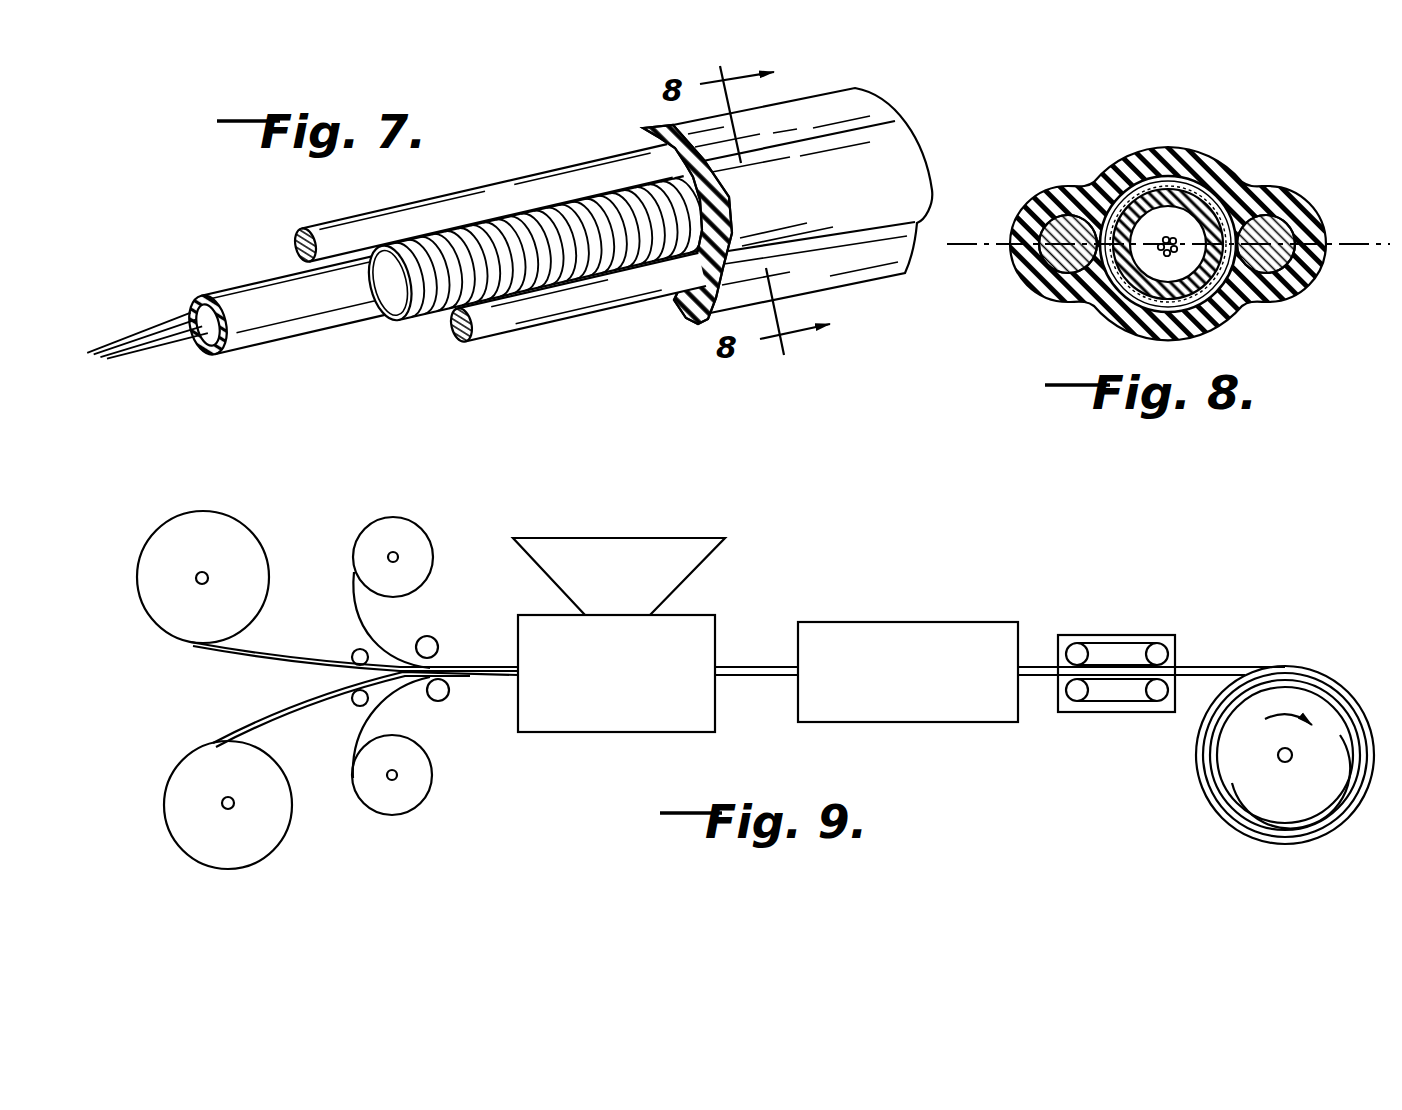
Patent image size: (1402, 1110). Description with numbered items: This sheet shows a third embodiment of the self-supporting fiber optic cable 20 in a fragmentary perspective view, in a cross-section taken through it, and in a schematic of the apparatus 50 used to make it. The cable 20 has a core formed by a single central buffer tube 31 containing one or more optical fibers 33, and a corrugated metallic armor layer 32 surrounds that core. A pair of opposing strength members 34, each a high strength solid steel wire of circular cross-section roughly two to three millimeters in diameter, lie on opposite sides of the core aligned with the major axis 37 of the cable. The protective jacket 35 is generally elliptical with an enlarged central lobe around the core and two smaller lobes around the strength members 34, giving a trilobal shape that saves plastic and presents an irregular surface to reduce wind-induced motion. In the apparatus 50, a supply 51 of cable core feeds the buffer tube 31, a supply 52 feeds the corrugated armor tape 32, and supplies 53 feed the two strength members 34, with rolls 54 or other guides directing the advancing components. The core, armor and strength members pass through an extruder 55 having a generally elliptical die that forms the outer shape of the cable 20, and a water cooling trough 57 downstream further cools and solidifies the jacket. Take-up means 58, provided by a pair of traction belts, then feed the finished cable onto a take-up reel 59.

In FIG. 7, the self-supporting fiber optic cable 20 is at (590, 127).
In FIG. 8, the self-supporting fiber optic cable 20 is at (1087, 152).
In FIG. 9, the self-supporting fiber optic cable 20 is at (746, 661).
In FIG. 7, the central buffer tube 31 is at (247, 293).
In FIG. 8, the central buffer tube 31 is at (1150, 205).
In FIG. 9, the central buffer tube 31 is at (228, 654).
In FIG. 7, the corrugated metallic armor layer 32 is at (447, 237).
In FIG. 8, the corrugated metallic armor layer 32 is at (1192, 210).
In FIG. 9, the corrugated metallic armor layer 32 is at (277, 715).
In FIG. 7, the optical fibers 33 is at (162, 345).
In FIG. 8, the optical fibers 33 is at (1172, 232).
In FIG. 7, the strength members 34 is at (545, 185).
In FIG. 8, the strength members 34 is at (1284, 228).
In FIG. 9, the strength members 34 is at (375, 620).
In FIG. 7, the protective jacket 35 is at (684, 306).
In FIG. 8, the protective jacket 35 is at (1270, 290).
In FIG. 8, the major axis 37 is at (968, 243).
In FIG. 9, the apparatus 50 is at (515, 754).
In FIG. 9, the supply of fiber optic cable core 51 is at (160, 530).
In FIG. 9, the armor tape supply reel 52 is at (182, 844).
In FIG. 9, the supplies for strength members 53 is at (360, 535).
In FIG. 9, the rolls 54 is at (354, 650).
In FIG. 9, the extruder 55 is at (667, 732).
In FIG. 9, the water cooling trough 57 is at (937, 722).
In FIG. 9, the take-up means 58 is at (1113, 642).
In FIG. 9, the take-up reel 59 is at (1332, 698).